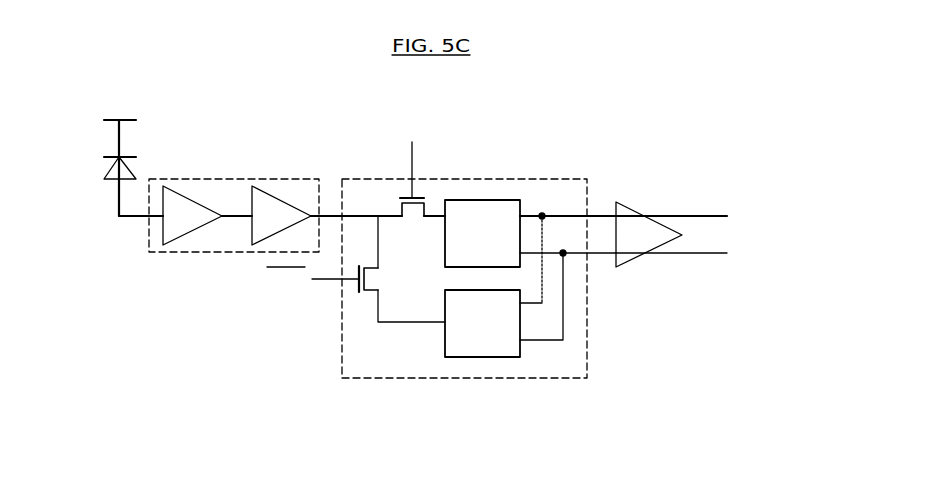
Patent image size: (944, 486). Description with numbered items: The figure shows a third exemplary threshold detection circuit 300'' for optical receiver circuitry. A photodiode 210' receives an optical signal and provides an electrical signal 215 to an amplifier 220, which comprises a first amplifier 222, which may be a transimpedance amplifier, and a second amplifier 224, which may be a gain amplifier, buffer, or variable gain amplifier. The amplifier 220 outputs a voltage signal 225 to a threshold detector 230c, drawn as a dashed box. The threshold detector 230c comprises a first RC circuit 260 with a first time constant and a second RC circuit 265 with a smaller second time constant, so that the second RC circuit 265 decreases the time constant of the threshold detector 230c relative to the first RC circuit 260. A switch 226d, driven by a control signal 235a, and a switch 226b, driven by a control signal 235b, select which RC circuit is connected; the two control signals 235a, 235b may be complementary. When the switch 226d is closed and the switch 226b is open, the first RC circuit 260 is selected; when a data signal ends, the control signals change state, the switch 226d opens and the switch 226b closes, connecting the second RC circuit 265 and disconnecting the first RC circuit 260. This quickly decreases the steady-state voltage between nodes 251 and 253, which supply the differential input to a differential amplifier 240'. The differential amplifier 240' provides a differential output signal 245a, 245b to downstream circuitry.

The threshold detection circuit 300'' is at (725, 81).
The photodiode 210' is at (91, 168).
The electrical signal 215 is at (117, 207).
The amplifier 220 is at (200, 179).
The first amplifier 222 is at (172, 243).
The second amplifier 224 is at (270, 186).
The voltage signal 225 is at (330, 210).
The threshold detector 230c is at (587, 360).
The switch 226d is at (415, 205).
The switch 226b is at (367, 277).
The control signal 235a is at (413, 150).
The control signal 235b is at (325, 282).
The first RC circuit 260 is at (503, 200).
The second RC circuit 265 is at (498, 357).
The node 251 is at (546, 258).
The node 253 is at (602, 255).
The differential amplifier 240' is at (634, 212).
The differential output signal 245a is at (697, 213).
The differential output signal 245b is at (715, 255).